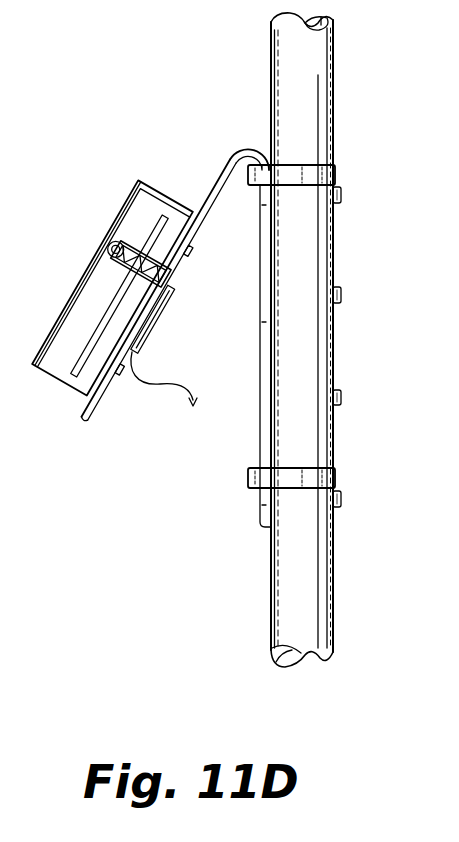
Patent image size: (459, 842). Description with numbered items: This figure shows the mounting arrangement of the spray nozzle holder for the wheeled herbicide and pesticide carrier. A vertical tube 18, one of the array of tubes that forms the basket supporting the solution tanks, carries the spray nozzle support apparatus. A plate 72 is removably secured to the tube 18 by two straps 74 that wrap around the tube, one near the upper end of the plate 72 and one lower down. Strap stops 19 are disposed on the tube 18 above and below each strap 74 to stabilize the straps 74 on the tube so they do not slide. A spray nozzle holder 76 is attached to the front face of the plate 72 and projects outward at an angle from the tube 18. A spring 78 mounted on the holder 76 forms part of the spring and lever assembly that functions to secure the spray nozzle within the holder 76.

The tube 18 is at (272, 48).
The strap stop 19 is at (337, 200).
The plate 72 is at (224, 166).
The strap 74 is at (337, 172).
The spray nozzle holder 76 is at (63, 370).
The spring 78 is at (112, 244).